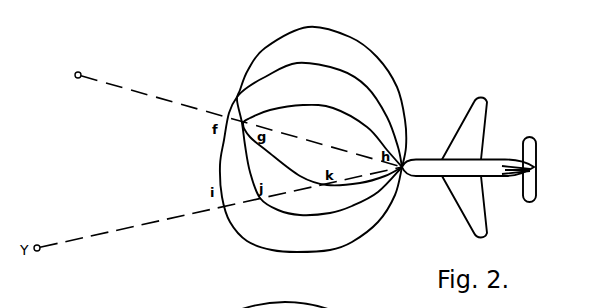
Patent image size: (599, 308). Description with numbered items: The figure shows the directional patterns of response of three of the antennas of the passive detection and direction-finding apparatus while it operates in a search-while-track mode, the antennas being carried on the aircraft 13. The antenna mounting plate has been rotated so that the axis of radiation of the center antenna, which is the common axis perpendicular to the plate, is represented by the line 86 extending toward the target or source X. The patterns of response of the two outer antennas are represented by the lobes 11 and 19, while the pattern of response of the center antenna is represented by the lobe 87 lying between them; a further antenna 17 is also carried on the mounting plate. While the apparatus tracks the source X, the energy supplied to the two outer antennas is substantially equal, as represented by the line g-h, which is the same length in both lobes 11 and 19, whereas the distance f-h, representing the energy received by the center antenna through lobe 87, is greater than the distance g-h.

The lobe 11 is at (333, 28).
The lobe 19 is at (257, 247).
The lobe or pattern 87 is at (237, 98).
The line 86 is at (133, 91).
The aircraft 13 is at (419, 161).
The antenna 17 is at (297, 305).